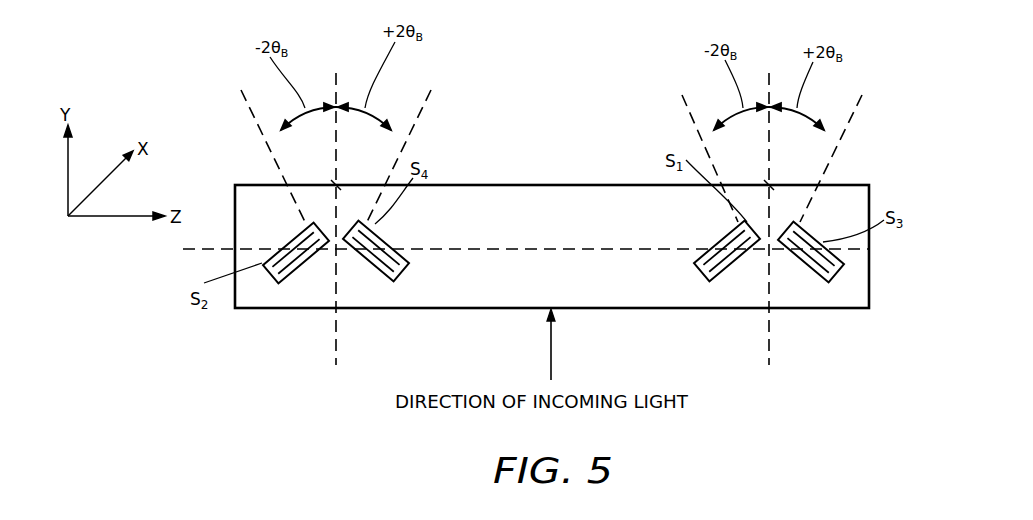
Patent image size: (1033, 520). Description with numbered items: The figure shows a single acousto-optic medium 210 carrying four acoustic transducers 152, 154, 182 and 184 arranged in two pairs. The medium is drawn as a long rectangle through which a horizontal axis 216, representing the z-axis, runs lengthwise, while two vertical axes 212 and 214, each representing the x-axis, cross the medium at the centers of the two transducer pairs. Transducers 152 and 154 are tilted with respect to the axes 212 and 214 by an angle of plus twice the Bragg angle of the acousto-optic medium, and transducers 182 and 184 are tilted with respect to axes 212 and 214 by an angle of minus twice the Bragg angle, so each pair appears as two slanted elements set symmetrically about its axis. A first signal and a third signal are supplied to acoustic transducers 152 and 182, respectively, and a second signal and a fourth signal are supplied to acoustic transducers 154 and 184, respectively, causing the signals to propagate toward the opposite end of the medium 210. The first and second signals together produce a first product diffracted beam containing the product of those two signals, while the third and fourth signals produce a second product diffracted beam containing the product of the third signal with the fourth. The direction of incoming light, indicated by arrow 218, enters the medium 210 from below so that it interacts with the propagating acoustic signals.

The acoustic transducer 152 is at (713, 283).
The acoustic transducer 154 is at (283, 288).
The acoustic transducer 182 is at (823, 284).
The acoustic transducer 184 is at (389, 284).
The acousto-optic medium 210 is at (866, 310).
The axis 212 is at (769, 365).
The axis 214 is at (336, 365).
The axis 216 is at (191, 250).
The direction of incoming light 218 is at (551, 380).